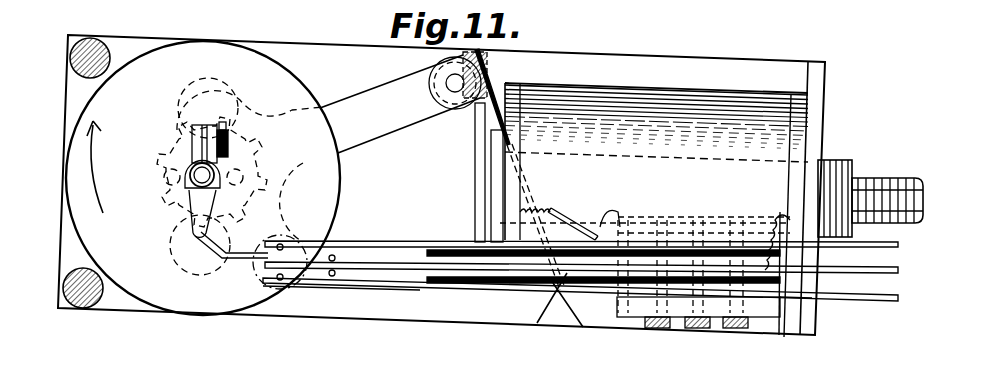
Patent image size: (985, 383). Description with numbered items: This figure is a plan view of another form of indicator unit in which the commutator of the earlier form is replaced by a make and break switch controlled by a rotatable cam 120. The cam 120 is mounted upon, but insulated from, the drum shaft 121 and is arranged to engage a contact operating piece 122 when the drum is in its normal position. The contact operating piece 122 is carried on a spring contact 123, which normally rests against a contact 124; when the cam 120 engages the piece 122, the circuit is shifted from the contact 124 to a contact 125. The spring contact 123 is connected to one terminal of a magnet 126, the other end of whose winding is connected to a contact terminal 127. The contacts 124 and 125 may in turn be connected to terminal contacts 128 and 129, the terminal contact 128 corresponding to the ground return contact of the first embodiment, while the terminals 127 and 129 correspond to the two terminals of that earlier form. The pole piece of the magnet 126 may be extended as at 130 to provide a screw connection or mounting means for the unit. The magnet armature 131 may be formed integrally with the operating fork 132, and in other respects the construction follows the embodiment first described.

The rotatable cam 120 is at (198, 237).
The drum shaft 121 is at (197, 173).
The contact operating piece 122 is at (244, 270).
The spring contact 123 is at (400, 268).
The contact 124 is at (248, 305).
The contact 125 is at (323, 287).
The magnet 126 is at (773, 145).
The contact terminal 127 is at (898, 244).
The terminal contact 128 is at (898, 270).
The terminal contact 129 is at (898, 298).
The pole piece extension 130 is at (888, 178).
The magnet armature 131 is at (482, 163).
The operating fork 132 is at (405, 120).